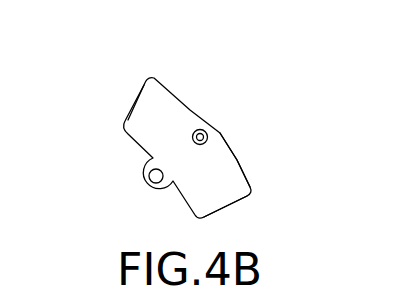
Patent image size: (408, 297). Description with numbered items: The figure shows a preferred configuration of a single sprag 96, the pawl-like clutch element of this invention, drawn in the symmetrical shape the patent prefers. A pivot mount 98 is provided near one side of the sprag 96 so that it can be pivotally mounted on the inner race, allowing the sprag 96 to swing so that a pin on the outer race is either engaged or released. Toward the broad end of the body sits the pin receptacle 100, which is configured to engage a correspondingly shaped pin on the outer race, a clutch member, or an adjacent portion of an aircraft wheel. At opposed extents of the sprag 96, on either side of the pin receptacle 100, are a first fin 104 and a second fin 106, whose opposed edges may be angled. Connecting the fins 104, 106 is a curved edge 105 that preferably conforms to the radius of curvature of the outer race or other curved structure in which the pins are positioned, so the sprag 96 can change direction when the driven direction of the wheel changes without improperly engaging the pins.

The sprag 96 is at (176, 75).
The pivot mount 98 is at (151, 181).
The pin receptacle 100 is at (206, 132).
The first fin 104 is at (231, 206).
The curved edge 105 is at (238, 160).
The second fin 106 is at (138, 112).